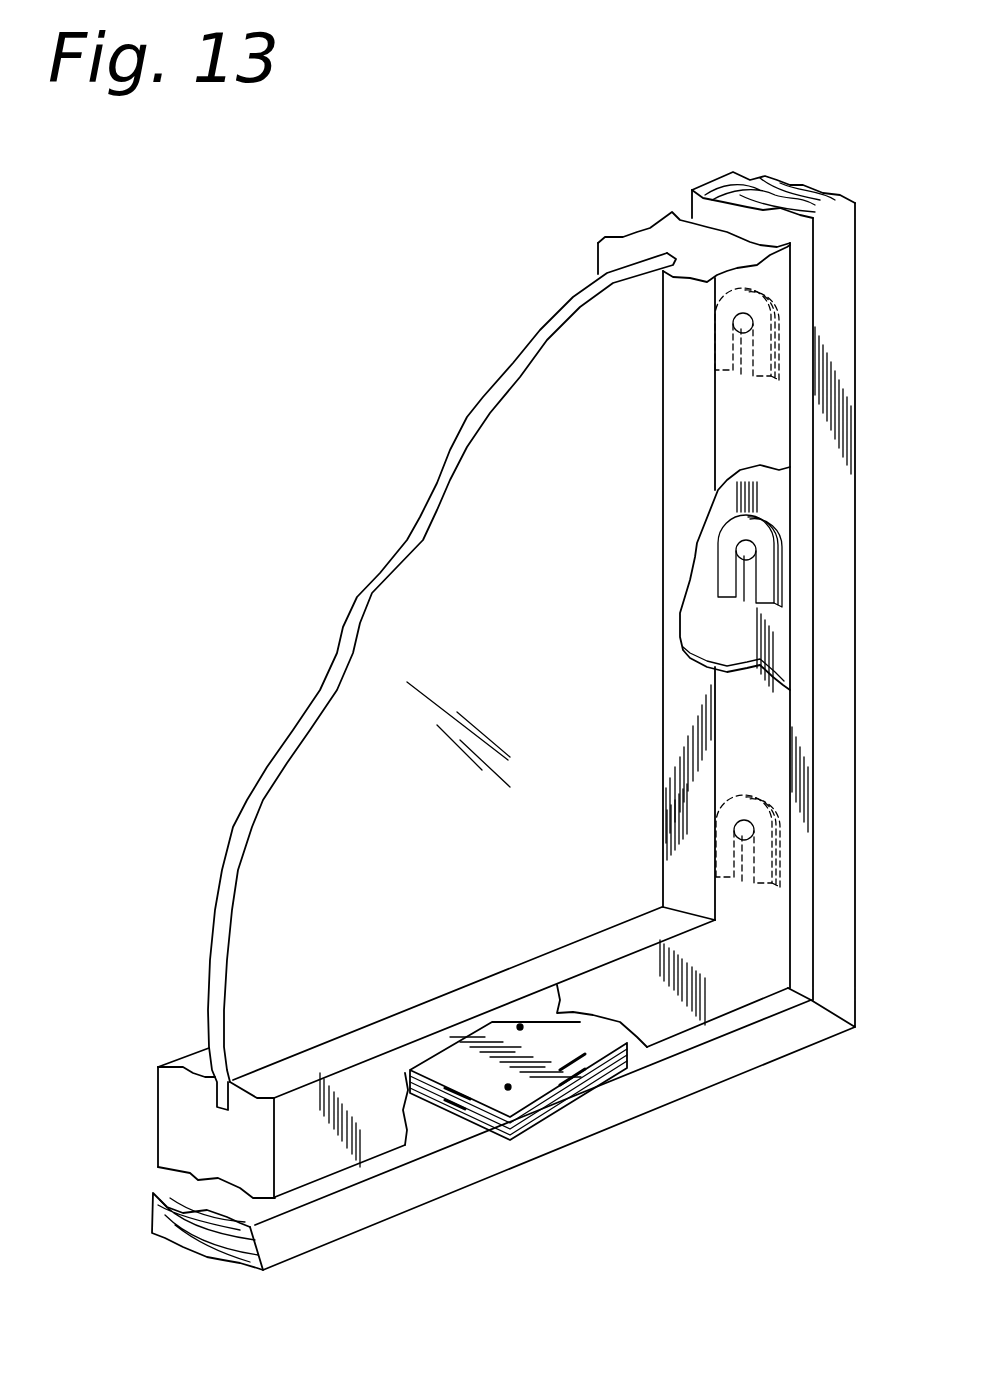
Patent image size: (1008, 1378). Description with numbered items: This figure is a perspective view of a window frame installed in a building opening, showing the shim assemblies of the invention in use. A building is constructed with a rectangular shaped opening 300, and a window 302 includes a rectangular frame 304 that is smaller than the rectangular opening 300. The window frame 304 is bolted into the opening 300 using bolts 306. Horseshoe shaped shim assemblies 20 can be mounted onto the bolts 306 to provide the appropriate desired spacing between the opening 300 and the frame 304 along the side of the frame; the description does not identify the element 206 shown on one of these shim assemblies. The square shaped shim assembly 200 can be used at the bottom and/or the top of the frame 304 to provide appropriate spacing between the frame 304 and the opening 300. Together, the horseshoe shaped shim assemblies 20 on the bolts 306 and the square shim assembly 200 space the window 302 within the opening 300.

The shim assembly 20 is at (763, 567).
The shim assembly 200 is at (625, 1073).
The clip aperture 206 is at (743, 323).
The opening 300 is at (795, 642).
The window 302 is at (222, 767).
The frame 304 is at (735, 980).
The bolts 306 is at (724, 587).